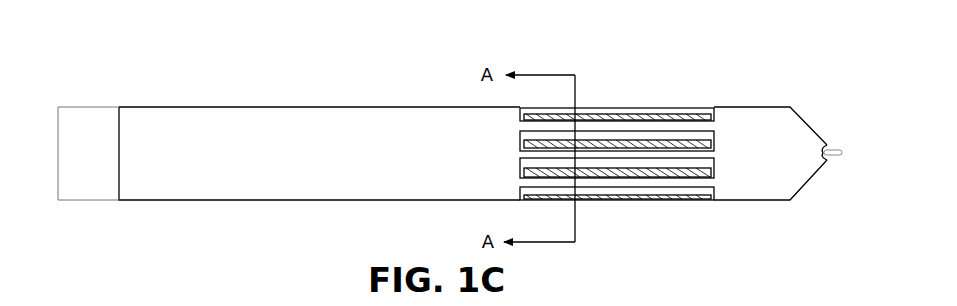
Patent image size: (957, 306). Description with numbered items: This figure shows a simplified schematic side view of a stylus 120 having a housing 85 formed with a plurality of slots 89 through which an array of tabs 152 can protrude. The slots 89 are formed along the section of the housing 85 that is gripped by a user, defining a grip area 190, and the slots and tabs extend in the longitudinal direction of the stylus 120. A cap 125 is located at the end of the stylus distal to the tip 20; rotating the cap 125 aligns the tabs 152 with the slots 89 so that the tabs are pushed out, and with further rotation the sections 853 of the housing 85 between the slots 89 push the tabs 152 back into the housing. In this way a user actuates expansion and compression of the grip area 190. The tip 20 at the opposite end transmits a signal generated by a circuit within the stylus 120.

The tip 20 is at (828, 148).
The housing 85 is at (277, 109).
The slots 89 is at (715, 137).
The stylus 120 is at (438, 83).
The cap 125 is at (100, 110).
The tabs 152 is at (595, 120).
The grip area 190 is at (595, 78).
The sections between slots 853 is at (658, 155).